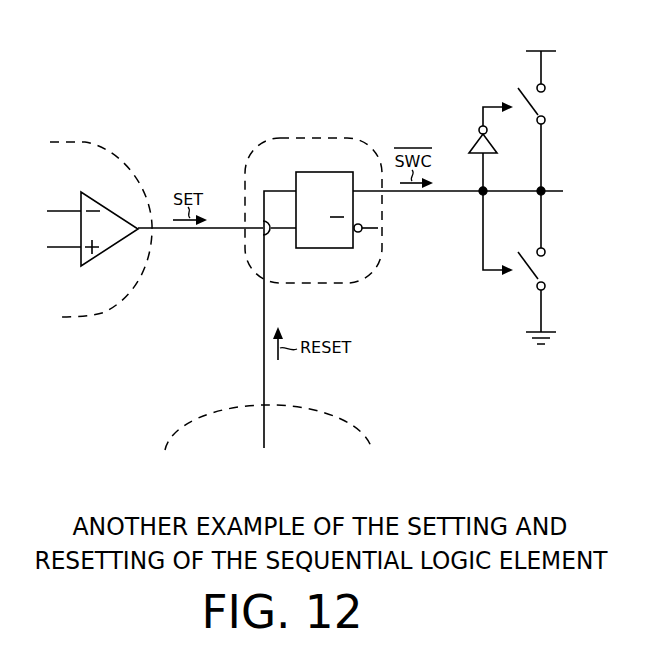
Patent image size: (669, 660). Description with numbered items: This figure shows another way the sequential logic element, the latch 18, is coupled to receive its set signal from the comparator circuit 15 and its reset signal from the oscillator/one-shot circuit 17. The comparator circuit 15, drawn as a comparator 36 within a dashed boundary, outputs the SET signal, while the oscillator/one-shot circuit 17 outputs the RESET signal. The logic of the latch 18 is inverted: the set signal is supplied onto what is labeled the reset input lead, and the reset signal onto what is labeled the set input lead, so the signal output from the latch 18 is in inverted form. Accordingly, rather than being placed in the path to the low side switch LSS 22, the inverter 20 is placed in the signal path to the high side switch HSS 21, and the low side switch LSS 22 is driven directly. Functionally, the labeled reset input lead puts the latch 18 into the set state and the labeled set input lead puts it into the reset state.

The comparator circuit 15 is at (94, 145).
The comparator 36 is at (108, 210).
The latch 18 is at (316, 137).
The oscillator/one-shot circuit 17 is at (208, 411).
The inverter 20 is at (490, 154).
The high side switch HSS 21 is at (554, 112).
The low side switch LSS 22 is at (554, 269).